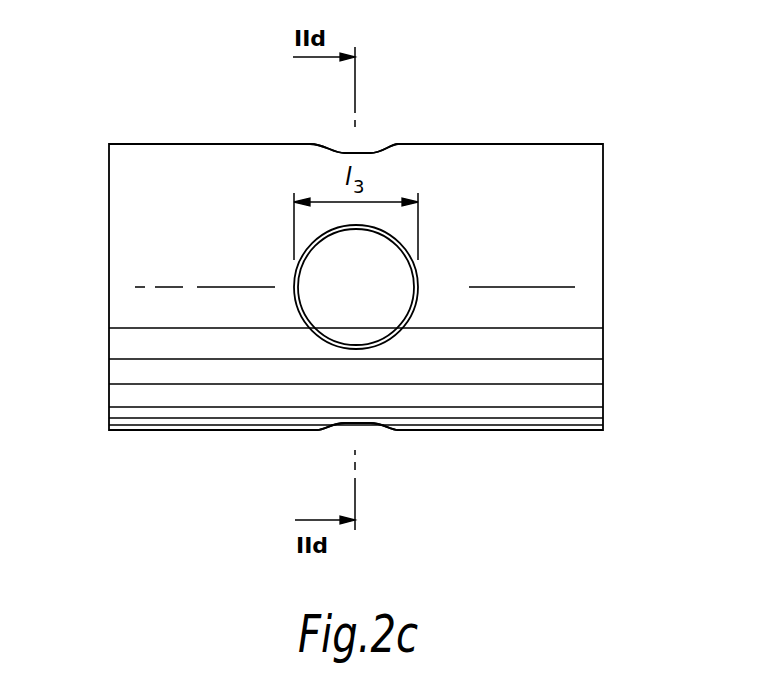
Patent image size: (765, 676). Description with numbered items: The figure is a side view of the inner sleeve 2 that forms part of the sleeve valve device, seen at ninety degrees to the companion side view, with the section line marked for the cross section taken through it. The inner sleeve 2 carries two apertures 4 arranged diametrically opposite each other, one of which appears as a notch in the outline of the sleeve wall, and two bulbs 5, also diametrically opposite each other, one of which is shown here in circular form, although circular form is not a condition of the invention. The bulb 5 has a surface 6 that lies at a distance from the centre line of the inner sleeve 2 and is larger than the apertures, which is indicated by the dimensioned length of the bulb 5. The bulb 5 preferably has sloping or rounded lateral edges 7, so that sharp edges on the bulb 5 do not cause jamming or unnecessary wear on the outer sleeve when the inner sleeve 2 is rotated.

The inner sleeve 2 is at (585, 190).
The aperture 4 is at (388, 144).
The bulb 5 is at (388, 306).
The surface 6 is at (390, 278).
The lateral edge 7 is at (383, 347).